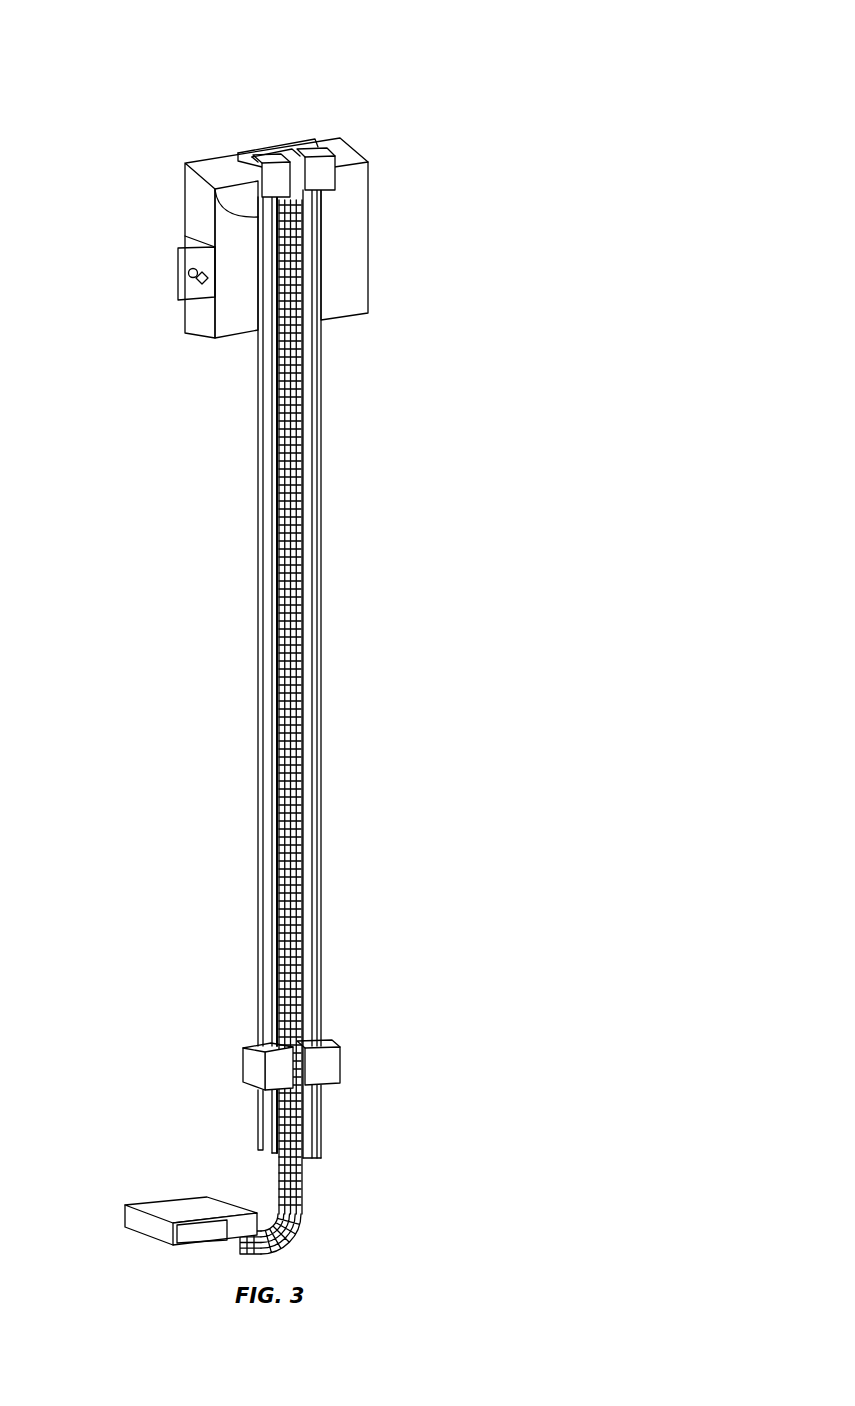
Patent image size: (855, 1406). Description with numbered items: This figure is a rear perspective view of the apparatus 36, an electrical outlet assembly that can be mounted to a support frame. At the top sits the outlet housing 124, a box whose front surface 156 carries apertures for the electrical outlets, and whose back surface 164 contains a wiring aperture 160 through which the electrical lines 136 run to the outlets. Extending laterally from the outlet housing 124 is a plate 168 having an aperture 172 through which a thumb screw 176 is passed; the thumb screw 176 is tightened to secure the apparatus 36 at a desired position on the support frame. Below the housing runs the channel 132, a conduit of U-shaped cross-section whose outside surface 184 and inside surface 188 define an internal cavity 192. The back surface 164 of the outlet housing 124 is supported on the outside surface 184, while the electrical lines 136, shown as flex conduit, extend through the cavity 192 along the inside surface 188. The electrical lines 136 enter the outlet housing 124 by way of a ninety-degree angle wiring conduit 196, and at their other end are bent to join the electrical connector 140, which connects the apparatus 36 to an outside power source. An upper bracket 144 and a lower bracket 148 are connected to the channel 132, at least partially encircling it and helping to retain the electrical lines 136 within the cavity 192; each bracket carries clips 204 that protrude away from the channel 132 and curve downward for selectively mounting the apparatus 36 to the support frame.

The apparatus 36 is at (407, 58).
The outlet housing 124 is at (355, 237).
The channel 132 is at (325, 546).
The electrical lines 136 is at (303, 1208).
The electrical connector 140 is at (135, 1225).
The upper bracket 144 is at (350, 182).
The lower bracket 148 is at (350, 1066).
The front surface 156 is at (185, 163).
The wiring aperture 160 is at (260, 212).
The back surface 164 is at (242, 265).
The plate 168 is at (179, 250).
The aperture 172 is at (172, 278).
The thumb screw 176 is at (192, 282).
The outside surface 184 is at (278, 600).
The inside surface 188 is at (305, 725).
The internal cavity 192 is at (243, 122).
The 90° angle wiring conduit 196 is at (300, 272).
The clips 204 is at (322, 170).